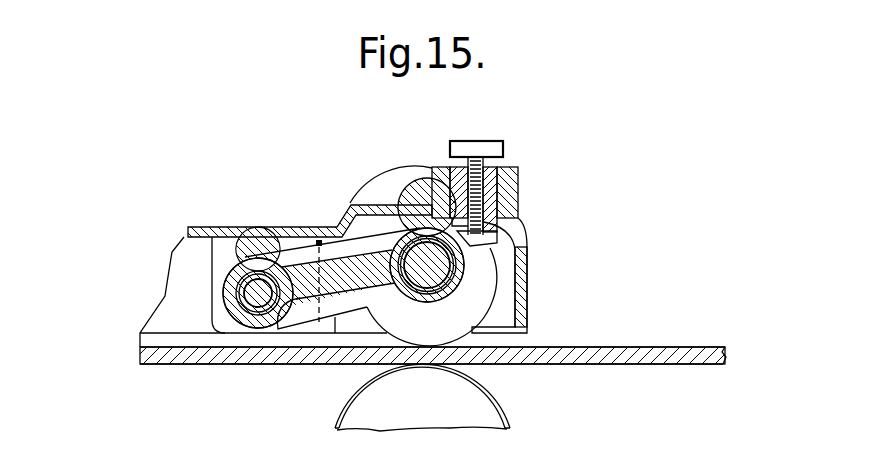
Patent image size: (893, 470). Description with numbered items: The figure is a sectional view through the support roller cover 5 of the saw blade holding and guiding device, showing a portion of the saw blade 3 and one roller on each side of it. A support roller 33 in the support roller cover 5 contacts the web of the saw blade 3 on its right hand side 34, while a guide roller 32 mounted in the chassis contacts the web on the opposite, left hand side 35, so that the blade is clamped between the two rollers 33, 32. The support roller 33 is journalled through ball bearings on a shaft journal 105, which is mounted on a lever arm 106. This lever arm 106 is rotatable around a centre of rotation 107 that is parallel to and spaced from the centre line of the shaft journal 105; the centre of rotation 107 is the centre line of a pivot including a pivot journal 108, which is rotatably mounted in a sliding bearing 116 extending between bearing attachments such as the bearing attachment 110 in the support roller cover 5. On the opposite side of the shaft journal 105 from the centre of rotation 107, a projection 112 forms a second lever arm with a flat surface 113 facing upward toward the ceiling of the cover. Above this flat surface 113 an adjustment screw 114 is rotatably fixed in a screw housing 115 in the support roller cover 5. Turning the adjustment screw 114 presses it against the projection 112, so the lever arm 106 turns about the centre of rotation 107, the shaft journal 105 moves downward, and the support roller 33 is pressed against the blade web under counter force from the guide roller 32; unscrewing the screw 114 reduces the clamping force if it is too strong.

The saw blade 3 is at (676, 345).
The support roller cover 5 is at (296, 227).
The guide roller 32 is at (477, 410).
The support roller 33 is at (483, 296).
The right hand side 34 is at (610, 347).
The left hand side 35 is at (654, 365).
The shaft journal 105 is at (413, 258).
The lever arm 106 is at (327, 273).
The centre of rotation 107 is at (258, 296).
The pivot journal 108 is at (263, 303).
The bearing attachment 110 is at (213, 248).
The projection 112 is at (492, 244).
The flat surface 113 is at (432, 185).
The adjustment screw 114 is at (508, 167).
The screw housing 115 is at (505, 190).
The sliding bearing 116 is at (252, 262).